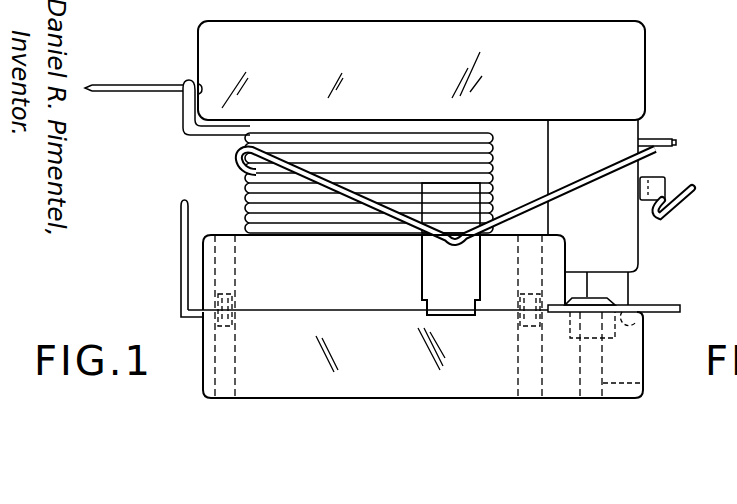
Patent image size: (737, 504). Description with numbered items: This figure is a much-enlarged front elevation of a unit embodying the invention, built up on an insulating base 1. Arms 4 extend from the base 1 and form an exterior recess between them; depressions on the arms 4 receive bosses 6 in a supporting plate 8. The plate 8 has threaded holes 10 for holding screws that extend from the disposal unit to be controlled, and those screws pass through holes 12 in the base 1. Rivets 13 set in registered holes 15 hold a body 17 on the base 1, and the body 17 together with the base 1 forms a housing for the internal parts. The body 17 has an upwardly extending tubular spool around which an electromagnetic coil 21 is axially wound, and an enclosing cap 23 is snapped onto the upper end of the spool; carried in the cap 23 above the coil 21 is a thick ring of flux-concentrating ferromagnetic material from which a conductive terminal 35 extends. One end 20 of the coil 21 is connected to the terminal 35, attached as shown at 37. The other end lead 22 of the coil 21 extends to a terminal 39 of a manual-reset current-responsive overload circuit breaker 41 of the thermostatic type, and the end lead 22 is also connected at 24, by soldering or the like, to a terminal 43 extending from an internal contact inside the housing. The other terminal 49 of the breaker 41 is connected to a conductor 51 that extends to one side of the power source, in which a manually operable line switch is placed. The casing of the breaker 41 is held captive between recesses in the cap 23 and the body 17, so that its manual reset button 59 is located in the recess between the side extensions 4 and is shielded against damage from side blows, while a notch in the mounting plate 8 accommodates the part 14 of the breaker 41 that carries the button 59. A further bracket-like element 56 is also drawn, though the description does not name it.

The insulating base 1 is at (390, 370).
The arms 4 is at (645, 372).
The bosses 6 is at (645, 326).
The supporting plate 8 is at (650, 308).
The threaded holes 10 is at (590, 298).
The holes 12 is at (645, 384).
The rivets 13 is at (235, 310).
The part of breaker 14 is at (620, 284).
The registered holes 15 is at (268, 262).
The body 17 is at (346, 305).
The one end of the coil 20 is at (225, 128).
The electromagnetic coil 21 is at (250, 197).
The end lead of the coil 22 is at (372, 213).
The enclosing cap 23 is at (400, 88).
The connection 24 is at (450, 244).
The conductive terminal 35 is at (157, 60).
The attachment 37 is at (183, 92).
The terminal of circuit breaker 39 is at (646, 139).
The manual-reset current-responsive overload circuit breaker 41 is at (606, 229).
The terminal 43 is at (458, 198).
The other terminal of breaker 49 is at (653, 176).
The conductor 51 is at (694, 186).
The bracket 56 is at (181, 270).
The manual reset button 59 is at (642, 352).